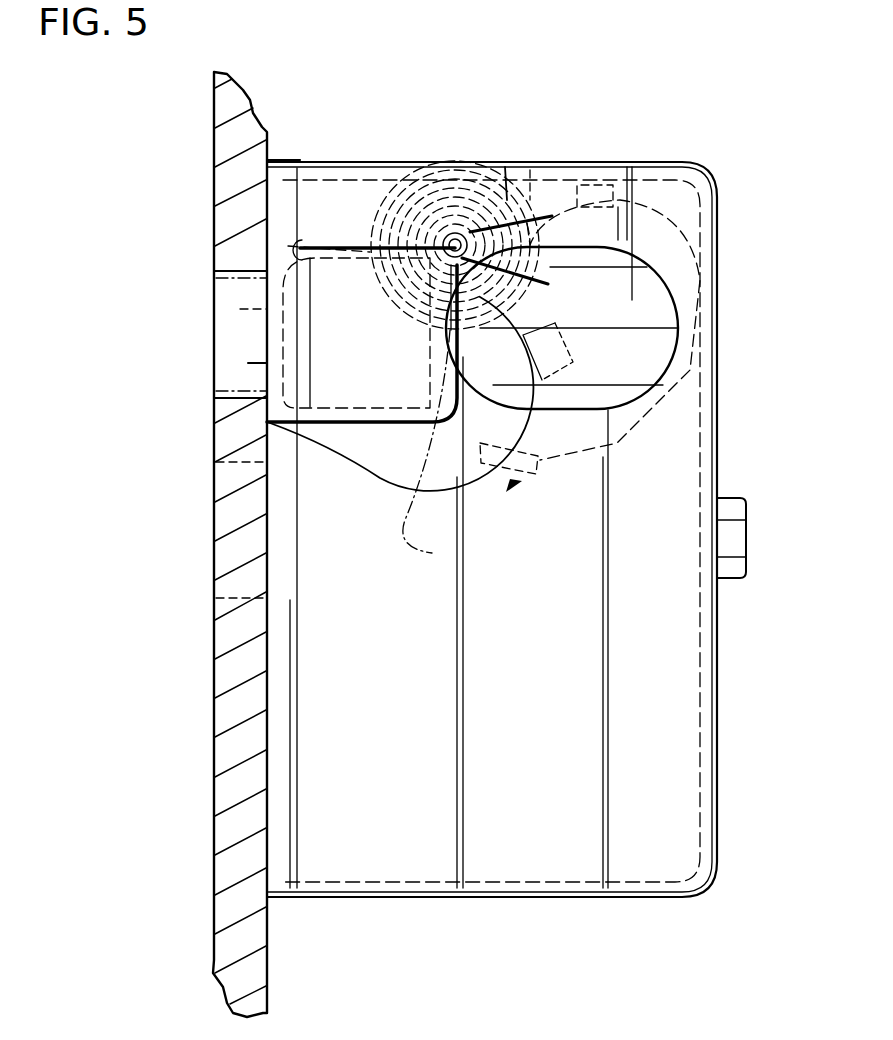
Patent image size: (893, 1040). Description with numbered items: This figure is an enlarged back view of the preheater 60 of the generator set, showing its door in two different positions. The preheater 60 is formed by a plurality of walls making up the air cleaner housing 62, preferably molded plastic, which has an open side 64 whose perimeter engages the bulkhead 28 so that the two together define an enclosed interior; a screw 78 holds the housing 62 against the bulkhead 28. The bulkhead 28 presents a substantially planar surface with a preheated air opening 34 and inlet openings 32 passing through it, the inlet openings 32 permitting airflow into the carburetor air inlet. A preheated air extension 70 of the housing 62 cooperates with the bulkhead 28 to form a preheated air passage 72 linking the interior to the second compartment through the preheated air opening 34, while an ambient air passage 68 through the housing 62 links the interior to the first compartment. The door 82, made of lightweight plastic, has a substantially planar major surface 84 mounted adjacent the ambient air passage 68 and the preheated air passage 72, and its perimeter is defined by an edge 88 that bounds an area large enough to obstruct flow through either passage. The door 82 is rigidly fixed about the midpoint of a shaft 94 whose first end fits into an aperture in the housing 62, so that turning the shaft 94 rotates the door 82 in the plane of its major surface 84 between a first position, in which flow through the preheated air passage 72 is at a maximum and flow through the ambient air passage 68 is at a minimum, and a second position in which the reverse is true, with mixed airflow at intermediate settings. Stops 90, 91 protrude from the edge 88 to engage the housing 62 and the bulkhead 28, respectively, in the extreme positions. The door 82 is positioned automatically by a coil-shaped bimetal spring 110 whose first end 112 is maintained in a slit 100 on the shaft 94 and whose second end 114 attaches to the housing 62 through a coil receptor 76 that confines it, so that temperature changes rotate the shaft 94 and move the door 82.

The bulkhead 28 is at (215, 180).
The inlet opening 32 is at (237, 546).
The preheated air opening 34 is at (232, 312).
The preheater 60 is at (717, 791).
The housing 62 is at (340, 162).
The open side 64 is at (267, 160).
The ambient air passage 68 is at (607, 342).
The preheated air extension 70 is at (302, 252).
The preheated air passage 72 is at (288, 246).
The coil receptor 76 is at (530, 187).
The screw 78 is at (746, 541).
The door 82 is at (690, 240).
The major surface 84 is at (422, 505).
The edge 88 is at (435, 450).
The stop 90 is at (583, 185).
The stop 91 is at (267, 362).
The shaft 94 is at (552, 216).
The slit 100 is at (428, 268).
The bimetal spring 110 is at (413, 185).
The first end 112 is at (548, 284).
The second end 114 is at (505, 165).